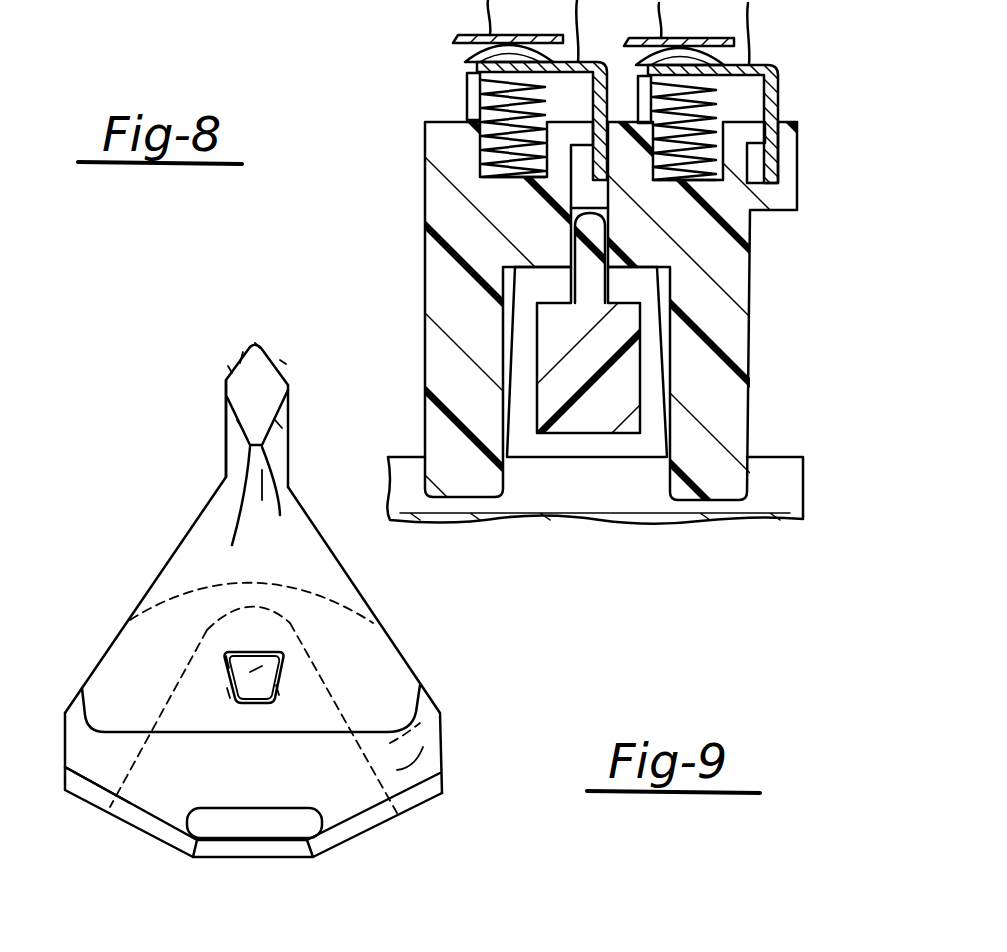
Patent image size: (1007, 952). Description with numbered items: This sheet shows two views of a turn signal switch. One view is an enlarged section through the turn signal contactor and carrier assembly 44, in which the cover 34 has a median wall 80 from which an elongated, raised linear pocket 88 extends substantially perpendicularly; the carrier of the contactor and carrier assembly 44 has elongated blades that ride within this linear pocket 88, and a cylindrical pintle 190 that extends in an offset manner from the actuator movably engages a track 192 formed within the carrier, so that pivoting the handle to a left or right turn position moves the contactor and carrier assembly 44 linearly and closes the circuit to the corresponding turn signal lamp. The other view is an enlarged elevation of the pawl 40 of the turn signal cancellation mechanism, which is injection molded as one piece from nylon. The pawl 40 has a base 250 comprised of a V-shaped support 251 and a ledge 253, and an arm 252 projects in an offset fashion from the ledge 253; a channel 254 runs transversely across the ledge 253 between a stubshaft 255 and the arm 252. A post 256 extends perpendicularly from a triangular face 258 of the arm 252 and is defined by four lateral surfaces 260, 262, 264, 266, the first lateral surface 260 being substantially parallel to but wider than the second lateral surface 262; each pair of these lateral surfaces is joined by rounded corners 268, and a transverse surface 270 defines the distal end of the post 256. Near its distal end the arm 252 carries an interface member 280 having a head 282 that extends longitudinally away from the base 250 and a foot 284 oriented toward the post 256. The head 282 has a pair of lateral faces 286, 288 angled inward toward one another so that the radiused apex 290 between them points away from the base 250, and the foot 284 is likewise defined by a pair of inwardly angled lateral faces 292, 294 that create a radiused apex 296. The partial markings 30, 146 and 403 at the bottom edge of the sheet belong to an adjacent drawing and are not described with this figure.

In FIG. 9, the cover 34 is at (660, 527).
In FIG. 9, the turn signal contactor and carrier assembly 44 is at (786, 72).
In FIG. 9, the median wall 80 is at (750, 527).
In FIG. 9, the linear pocket 88 is at (753, 470).
In FIG. 9, the pintle 190 is at (588, 243).
In FIG. 9, the track 192 is at (572, 232).
In FIG. 9, the element 30 is at (325, 948).
In FIG. 9, the element 146 is at (476, 942).
In FIG. 9, the element 403 is at (623, 942).
In FIG. 8, the pawl 40 is at (286, 616).
In FIG. 8, the base 250 is at (63, 737).
In FIG. 8, the V-shaped support 251 is at (442, 713).
In FIG. 8, the arm 252 is at (232, 462).
In FIG. 8, the ledge 253 is at (443, 745).
In FIG. 8, the channel 254 is at (170, 783).
In FIG. 8, the stubshaft 255 is at (275, 823).
In FIG. 8, the post 256 is at (270, 653).
In FIG. 8, the triangular face 258 is at (177, 583).
In FIG. 8, the first lateral surface 260 is at (243, 650).
In FIG. 8, the second lateral surface 262 is at (253, 703).
In FIG. 8, the lateral surface 264 is at (277, 688).
In FIG. 8, the lateral surface 266 is at (225, 692).
In FIG. 8, the rounded corners 268 is at (227, 658).
In FIG. 8, the transverse surface 270 is at (257, 670).
In FIG. 8, the interface member 280 is at (270, 388).
In FIG. 8, the head 282 is at (243, 362).
In FIG. 8, the foot 284 is at (238, 508).
In FIG. 8, the lateral face 286 is at (231, 370).
In FIG. 8, the lateral face 288 is at (283, 362).
In FIG. 8, the apex 290 is at (258, 343).
In FIG. 8, the lateral face 292 is at (237, 427).
In FIG. 8, the lateral face 294 is at (275, 425).
In FIG. 8, the radiused apex 296 is at (284, 508).